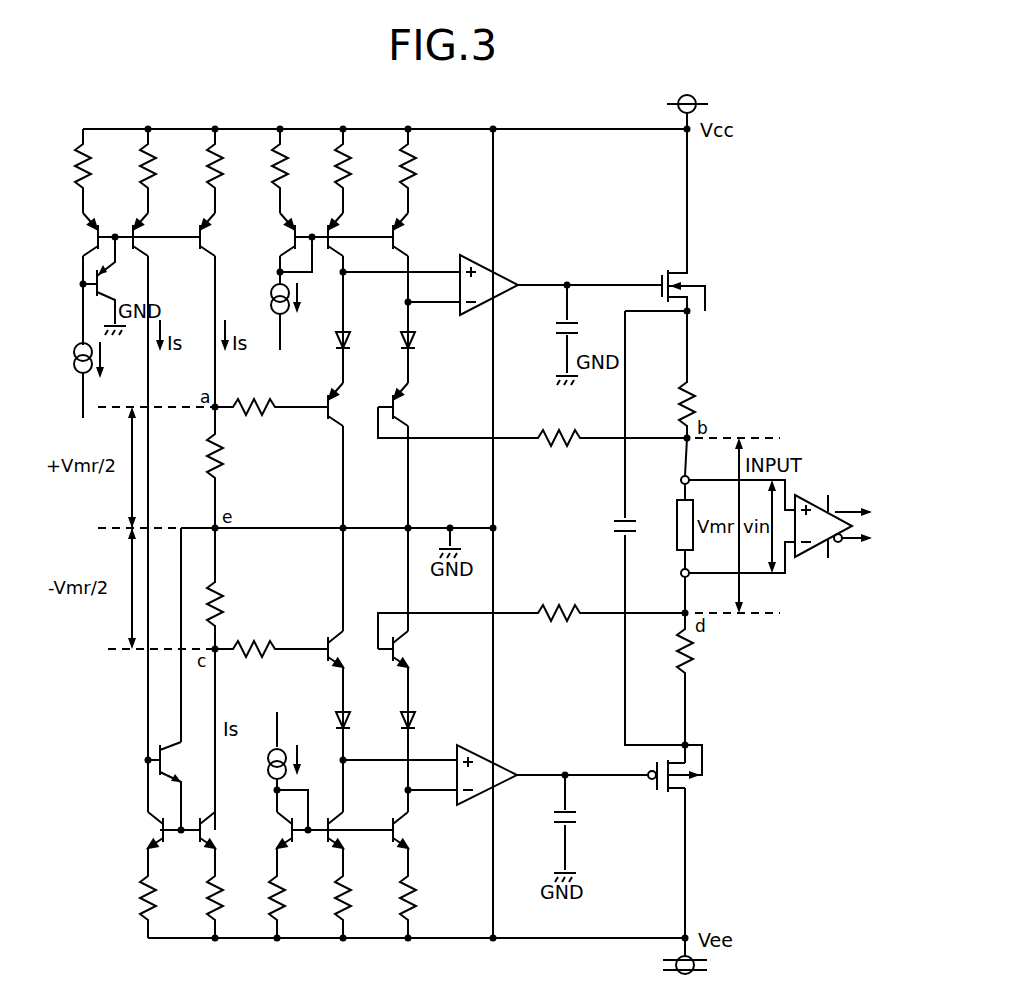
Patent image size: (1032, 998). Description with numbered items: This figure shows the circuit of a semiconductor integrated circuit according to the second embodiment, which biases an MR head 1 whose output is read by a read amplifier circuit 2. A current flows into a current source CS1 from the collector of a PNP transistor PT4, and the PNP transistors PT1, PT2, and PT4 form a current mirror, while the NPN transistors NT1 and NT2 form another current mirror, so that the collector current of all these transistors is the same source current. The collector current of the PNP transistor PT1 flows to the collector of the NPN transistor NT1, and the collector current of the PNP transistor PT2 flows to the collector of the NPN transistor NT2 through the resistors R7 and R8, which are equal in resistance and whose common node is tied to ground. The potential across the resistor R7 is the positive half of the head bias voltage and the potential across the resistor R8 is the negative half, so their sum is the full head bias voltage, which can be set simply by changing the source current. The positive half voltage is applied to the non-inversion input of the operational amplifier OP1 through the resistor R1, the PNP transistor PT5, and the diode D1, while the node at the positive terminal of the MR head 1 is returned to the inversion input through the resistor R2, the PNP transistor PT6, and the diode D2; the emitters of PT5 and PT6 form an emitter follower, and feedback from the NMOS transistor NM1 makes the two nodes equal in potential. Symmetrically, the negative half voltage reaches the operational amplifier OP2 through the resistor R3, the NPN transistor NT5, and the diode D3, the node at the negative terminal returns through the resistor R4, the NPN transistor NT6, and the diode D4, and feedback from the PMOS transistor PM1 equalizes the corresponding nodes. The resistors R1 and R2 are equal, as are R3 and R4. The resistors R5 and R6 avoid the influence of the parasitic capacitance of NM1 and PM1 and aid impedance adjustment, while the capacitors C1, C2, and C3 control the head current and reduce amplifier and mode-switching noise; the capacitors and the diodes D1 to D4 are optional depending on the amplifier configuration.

The MR head 1 is at (679, 501).
The read amplifier circuit 2 is at (797, 553).
The PNP transistor PT1 is at (161, 238).
The PNP transistor PT2 is at (224, 234).
The PNP transistor PT4 is at (69, 234).
The PNP transistor PT5 is at (351, 404).
The PNP transistor PT6 is at (421, 404).
The NPN transistor NT1 is at (132, 836).
The NPN transistor NT2 is at (228, 836).
The NPN transistor NT5 is at (355, 653).
The NPN transistor NT6 is at (421, 653).
The resistor R1 is at (254, 397).
The resistor R2 is at (559, 422).
The resistor R3 is at (254, 640).
The resistor R4 is at (559, 600).
The resistor R5 is at (671, 404).
The resistor R6 is at (669, 651).
The resistor R7 is at (197, 456).
The resistor R8 is at (229, 604).
The capacitor C1 is at (611, 532).
The capacitor C2 is at (552, 335).
The capacitor C3 is at (550, 828).
The diode D1 is at (357, 341).
The diode D2 is at (422, 341).
The diode D3 is at (357, 721).
The diode D4 is at (422, 721).
The operational amplifier OP1 is at (501, 285).
The operational amplifier OP2 is at (499, 775).
The NMOS transistor NM1 is at (704, 220).
The PMOS transistor PM1 is at (689, 777).
The current source CS1 is at (78, 362).